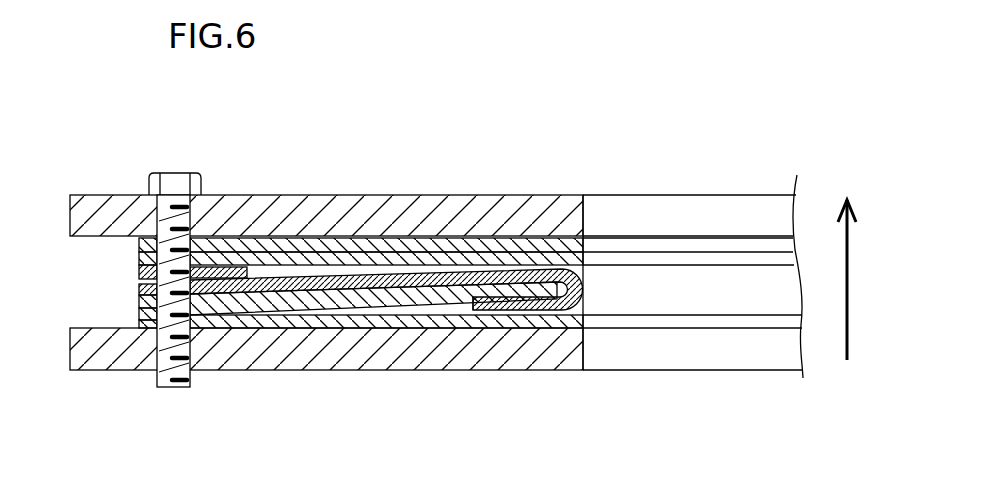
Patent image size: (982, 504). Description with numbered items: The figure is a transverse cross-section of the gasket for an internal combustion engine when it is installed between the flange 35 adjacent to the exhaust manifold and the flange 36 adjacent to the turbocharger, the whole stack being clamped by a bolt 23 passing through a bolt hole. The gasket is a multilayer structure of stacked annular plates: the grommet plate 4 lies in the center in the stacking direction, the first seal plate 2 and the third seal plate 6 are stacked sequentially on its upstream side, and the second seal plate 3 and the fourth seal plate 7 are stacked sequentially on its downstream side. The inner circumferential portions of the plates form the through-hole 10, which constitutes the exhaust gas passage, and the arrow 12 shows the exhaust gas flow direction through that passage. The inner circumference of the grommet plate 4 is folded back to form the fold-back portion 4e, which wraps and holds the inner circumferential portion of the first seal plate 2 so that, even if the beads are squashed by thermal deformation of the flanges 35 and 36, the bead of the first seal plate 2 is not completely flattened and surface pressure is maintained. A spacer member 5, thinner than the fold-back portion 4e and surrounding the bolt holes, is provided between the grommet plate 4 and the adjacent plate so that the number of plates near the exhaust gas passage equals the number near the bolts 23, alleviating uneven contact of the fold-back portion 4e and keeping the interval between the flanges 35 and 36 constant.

The first seal plate 2 is at (139, 306).
The second seal plate 3 is at (139, 258).
The grommet plate 4 is at (139, 289).
The fold-back portion 4e is at (508, 311).
The spacer member 5 is at (139, 271).
The third seal plate 6 is at (138, 323).
The fourth seal plate 7 is at (139, 245).
The through-hole 10 is at (585, 216).
The arrow 12 is at (849, 267).
The bolt 23 is at (174, 185).
The flange 35 is at (398, 362).
The flange 36 is at (392, 208).